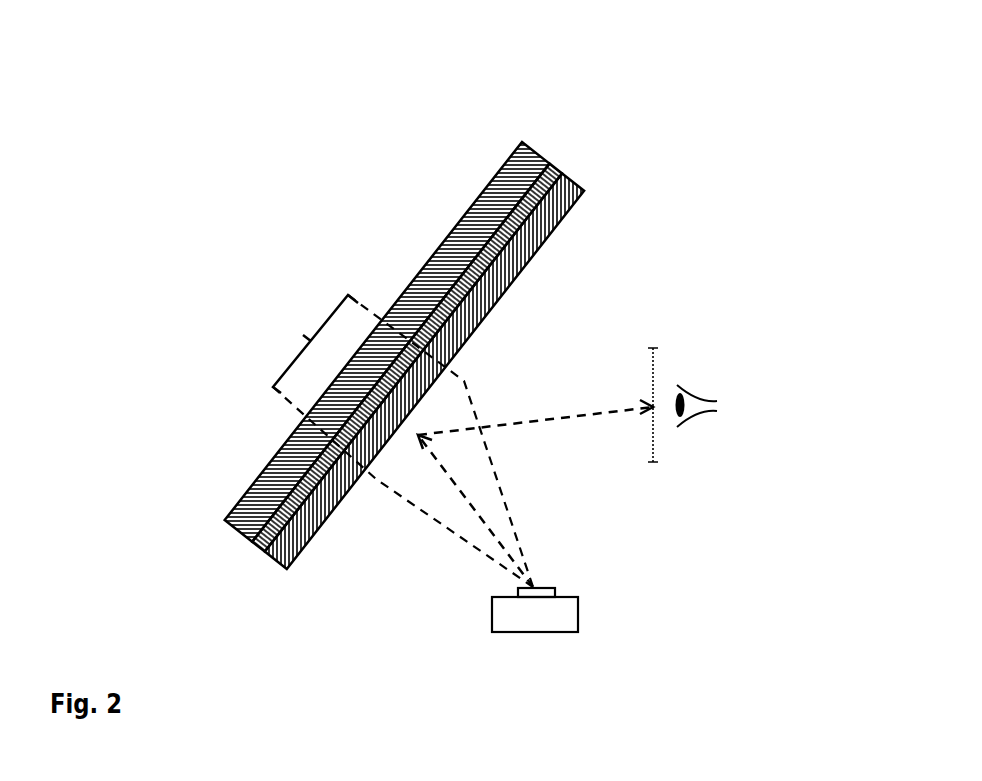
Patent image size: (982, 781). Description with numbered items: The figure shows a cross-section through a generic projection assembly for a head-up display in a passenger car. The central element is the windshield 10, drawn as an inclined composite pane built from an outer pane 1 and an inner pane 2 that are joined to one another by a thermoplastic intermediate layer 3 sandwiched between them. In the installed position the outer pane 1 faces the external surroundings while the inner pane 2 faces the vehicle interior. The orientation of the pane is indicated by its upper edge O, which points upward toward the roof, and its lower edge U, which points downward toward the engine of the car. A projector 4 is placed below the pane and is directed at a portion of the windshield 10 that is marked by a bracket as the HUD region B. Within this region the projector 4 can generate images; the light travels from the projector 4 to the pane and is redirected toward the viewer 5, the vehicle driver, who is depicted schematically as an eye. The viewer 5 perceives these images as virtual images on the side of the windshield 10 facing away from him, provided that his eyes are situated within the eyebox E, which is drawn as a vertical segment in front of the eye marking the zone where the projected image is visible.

The windshield 10 is at (438, 302).
The outer pane 1 is at (465, 217).
The inner pane 2 is at (579, 196).
The thermoplastic intermediate layer 3 is at (562, 173).
The projector 4 is at (557, 616).
The viewer 5 is at (713, 385).
The HUD region B is at (403, 441).
The upper edge O is at (553, 125).
The lower edge U is at (258, 580).
The eyebox E is at (670, 365).